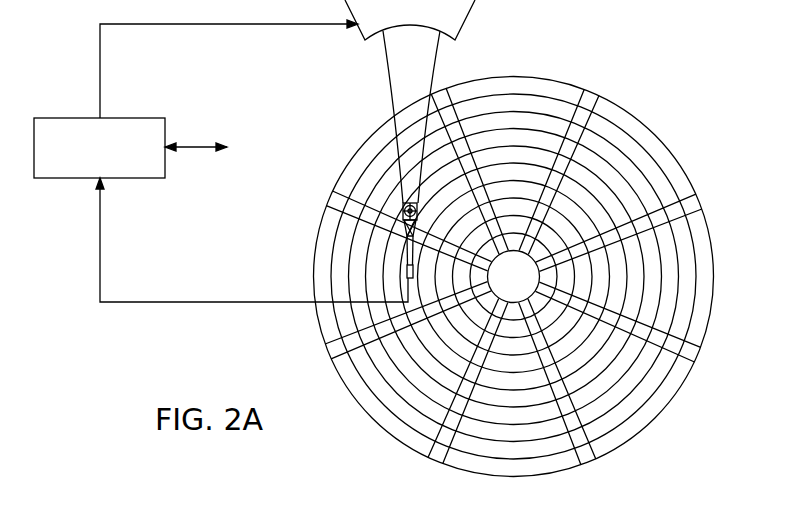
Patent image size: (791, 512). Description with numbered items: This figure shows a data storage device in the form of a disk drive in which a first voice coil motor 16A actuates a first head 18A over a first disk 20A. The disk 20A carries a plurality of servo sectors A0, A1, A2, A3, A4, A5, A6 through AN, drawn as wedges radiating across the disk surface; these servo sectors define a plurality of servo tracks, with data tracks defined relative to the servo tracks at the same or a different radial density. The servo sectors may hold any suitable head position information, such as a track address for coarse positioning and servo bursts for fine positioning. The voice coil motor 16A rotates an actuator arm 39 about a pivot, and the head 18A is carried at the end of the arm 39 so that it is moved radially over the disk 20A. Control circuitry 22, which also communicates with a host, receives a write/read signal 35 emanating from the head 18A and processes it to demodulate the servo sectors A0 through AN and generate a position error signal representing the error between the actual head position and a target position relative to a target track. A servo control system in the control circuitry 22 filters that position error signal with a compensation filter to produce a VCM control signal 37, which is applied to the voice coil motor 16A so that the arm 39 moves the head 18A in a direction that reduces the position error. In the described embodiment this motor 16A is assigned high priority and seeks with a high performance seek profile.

The control circuitry 22 is at (136, 117).
The control signal 37 is at (99, 57).
The read signal 35 is at (218, 301).
The first voice coil motor 16A is at (363, 40).
The actuator arm 39 is at (394, 101).
The first head 18A is at (398, 270).
The first disk 20A is at (638, 104).
The servo sector A0 is at (592, 92).
The servo sector A1 is at (696, 202).
The servo sector A2 is at (697, 353).
The servo sector A3 is at (585, 462).
The servo sector A4 is at (436, 462).
The servo sector A5 is at (332, 354).
The servo sector A6 is at (332, 196).
The servo sector AN is at (442, 95).